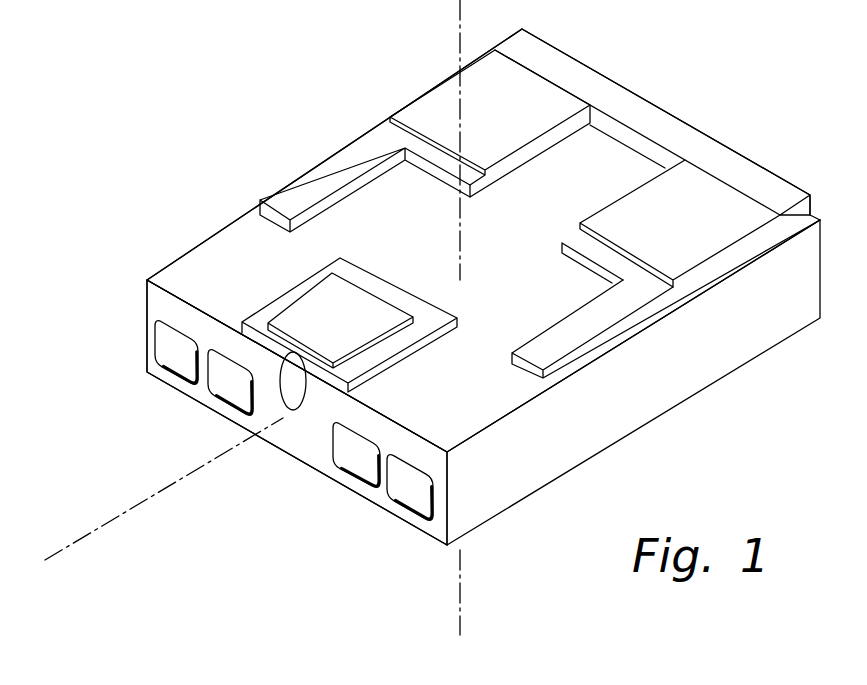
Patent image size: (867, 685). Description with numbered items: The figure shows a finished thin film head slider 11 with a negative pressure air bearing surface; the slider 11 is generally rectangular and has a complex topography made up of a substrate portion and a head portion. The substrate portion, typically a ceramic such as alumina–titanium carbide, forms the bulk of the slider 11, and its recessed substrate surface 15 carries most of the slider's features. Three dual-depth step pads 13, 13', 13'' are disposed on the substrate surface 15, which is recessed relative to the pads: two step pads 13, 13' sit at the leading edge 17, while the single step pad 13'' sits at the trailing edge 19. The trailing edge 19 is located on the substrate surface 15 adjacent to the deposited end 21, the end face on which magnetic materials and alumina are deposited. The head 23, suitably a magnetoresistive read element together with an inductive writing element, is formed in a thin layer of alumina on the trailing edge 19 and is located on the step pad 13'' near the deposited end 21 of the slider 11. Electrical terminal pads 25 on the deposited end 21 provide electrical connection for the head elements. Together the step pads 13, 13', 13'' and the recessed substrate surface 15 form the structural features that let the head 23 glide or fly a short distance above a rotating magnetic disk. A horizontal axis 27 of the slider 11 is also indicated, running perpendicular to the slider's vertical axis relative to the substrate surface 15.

The thin film head slider 11 is at (308, 143).
The dual-depth step pad 13 is at (426, 141).
The dual-depth step pad 13' is at (666, 269).
The dual-depth step pad 13'' is at (375, 326).
The substrate surface 15 is at (521, 250).
The leading edge 17 is at (718, 137).
The trailing edge 19 is at (327, 372).
The deposited end 21 is at (322, 453).
The head 23 is at (292, 352).
The electrical terminal pads 25 is at (407, 492).
The horizontal axis 27 is at (131, 503).